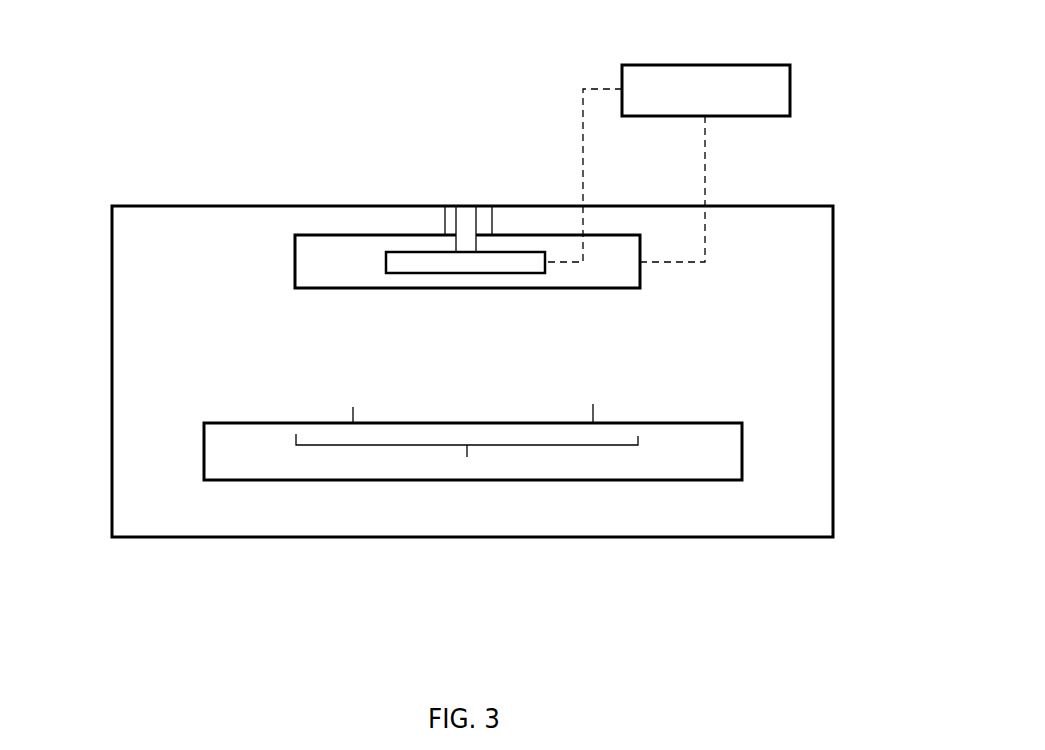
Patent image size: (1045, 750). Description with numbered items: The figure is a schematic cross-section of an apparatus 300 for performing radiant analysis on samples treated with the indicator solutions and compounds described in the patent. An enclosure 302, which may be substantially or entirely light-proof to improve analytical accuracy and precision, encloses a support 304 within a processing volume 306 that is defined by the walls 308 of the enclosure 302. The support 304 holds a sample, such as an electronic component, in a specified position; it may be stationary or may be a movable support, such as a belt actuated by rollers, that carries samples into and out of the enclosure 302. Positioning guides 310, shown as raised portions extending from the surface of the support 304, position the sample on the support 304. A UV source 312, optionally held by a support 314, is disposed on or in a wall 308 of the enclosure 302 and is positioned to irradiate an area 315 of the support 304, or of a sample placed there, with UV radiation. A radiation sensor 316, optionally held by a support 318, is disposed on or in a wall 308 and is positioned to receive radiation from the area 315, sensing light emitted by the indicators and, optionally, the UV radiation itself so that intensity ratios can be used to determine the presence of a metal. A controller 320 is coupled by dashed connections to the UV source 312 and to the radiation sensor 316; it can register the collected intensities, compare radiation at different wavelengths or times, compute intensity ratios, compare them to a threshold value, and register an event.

The apparatus 300 is at (177, 160).
The enclosure 302 is at (787, 177).
The support 304 is at (715, 422).
The processing volume 306 is at (150, 315).
The walls 308 is at (834, 272).
The positioning guides 310 is at (593, 404).
The UV source 312 is at (427, 242).
The support 314 is at (490, 220).
The area 315 is at (525, 447).
The radiation sensor 316 is at (527, 255).
The support 318 is at (453, 232).
The controller 320 is at (798, 67).